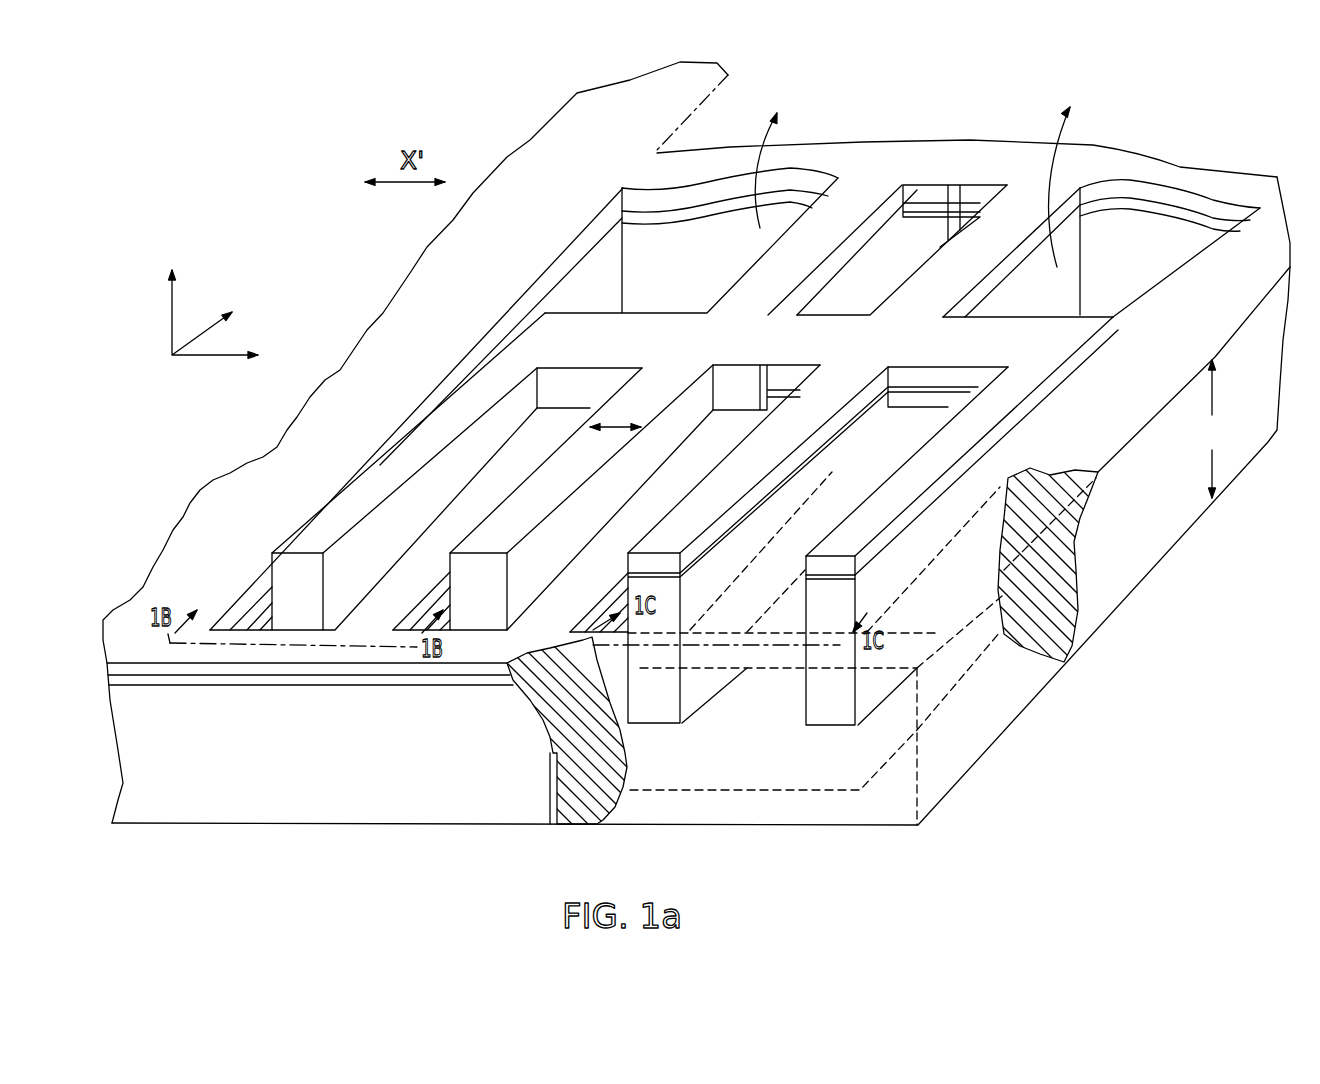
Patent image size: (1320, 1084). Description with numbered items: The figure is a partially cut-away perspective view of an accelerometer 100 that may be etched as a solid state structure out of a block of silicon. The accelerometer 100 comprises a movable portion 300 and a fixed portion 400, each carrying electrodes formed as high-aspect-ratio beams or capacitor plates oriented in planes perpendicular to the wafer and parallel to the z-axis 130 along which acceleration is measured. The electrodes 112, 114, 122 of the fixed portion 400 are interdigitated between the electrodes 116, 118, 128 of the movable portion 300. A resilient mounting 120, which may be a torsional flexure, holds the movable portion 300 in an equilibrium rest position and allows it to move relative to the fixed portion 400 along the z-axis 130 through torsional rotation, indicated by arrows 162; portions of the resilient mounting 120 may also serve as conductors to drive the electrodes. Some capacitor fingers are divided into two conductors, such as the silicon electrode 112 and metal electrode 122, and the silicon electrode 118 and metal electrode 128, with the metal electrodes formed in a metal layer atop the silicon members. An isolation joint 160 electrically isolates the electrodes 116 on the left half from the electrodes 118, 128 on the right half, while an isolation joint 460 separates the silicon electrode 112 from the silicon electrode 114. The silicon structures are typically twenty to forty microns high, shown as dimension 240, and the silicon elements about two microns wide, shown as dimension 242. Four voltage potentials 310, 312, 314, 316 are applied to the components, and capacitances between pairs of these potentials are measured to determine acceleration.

The accelerometer 100 is at (300, 243).
The z-axis 130 is at (177, 322).
The fixed portion 400 is at (510, 253).
The potential 314 is at (590, 232).
The potential 310 is at (613, 303).
The potential 312 is at (1086, 178).
The resilient mounting 120 is at (487, 355).
The arrows 162 is at (757, 162).
The isolation joint 160 is at (967, 167).
The movable portion 300 is at (639, 358).
The potential 316 is at (384, 553).
The electrode 116 is at (358, 592).
The electrode 122 is at (225, 618).
The electrode 112 is at (263, 610).
The electrode 128 is at (830, 557).
The electrode 118 is at (843, 593).
The electrode 114 is at (777, 613).
The isolation joint 460 is at (550, 828).
The dimension 240 is at (1211, 429).
The dimension 242 is at (613, 426).